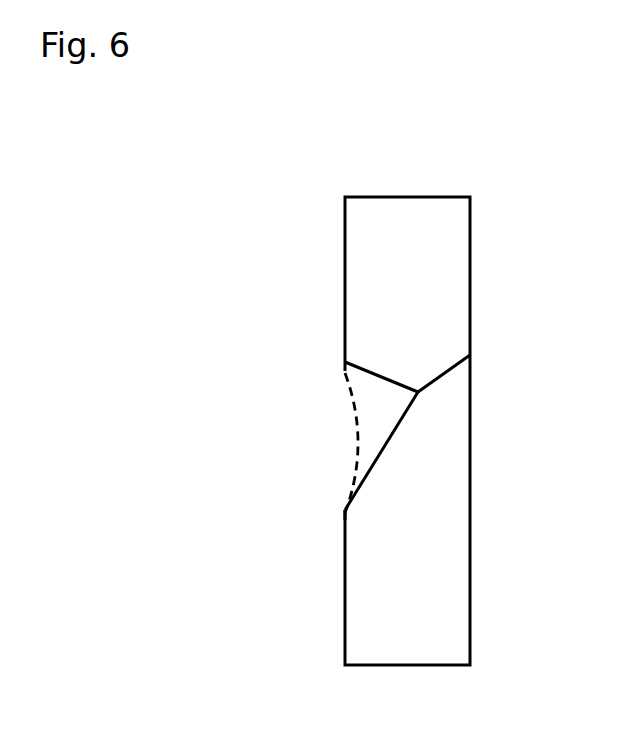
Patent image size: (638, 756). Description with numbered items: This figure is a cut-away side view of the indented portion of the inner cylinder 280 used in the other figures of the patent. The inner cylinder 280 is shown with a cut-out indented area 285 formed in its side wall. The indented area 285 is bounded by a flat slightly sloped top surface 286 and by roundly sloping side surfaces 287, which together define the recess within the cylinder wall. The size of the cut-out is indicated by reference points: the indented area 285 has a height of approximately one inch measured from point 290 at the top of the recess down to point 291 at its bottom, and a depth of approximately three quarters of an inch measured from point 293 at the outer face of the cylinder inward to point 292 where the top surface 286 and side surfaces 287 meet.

The inner cylinder 280 is at (440, 262).
The cut-out indented area 285 is at (358, 426).
The flat slightly sloped top surface 286 is at (470, 355).
The roundly sloping side surfaces 287 is at (385, 447).
The point 290 is at (352, 365).
The point 291 is at (343, 513).
The point 292 is at (418, 392).
The point 293 is at (344, 382).